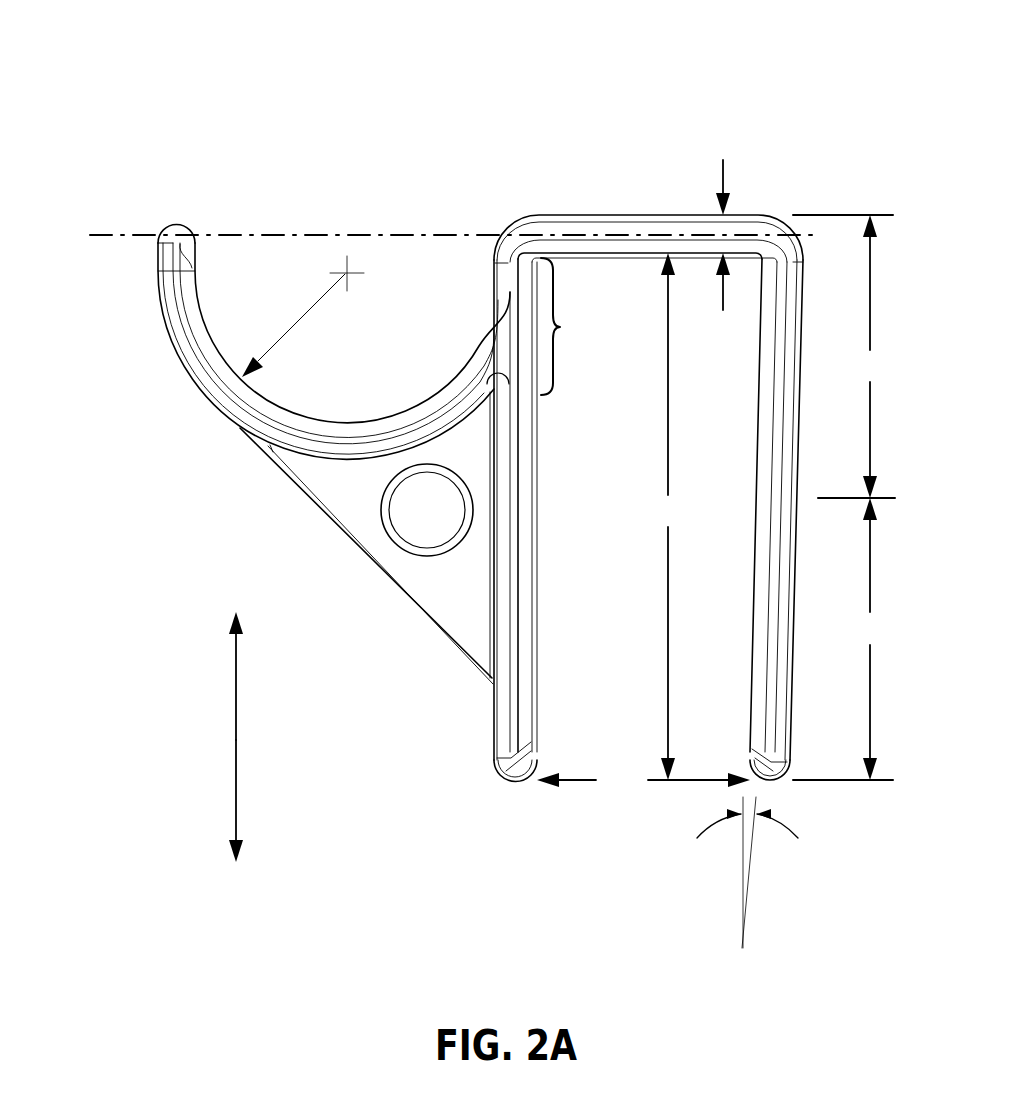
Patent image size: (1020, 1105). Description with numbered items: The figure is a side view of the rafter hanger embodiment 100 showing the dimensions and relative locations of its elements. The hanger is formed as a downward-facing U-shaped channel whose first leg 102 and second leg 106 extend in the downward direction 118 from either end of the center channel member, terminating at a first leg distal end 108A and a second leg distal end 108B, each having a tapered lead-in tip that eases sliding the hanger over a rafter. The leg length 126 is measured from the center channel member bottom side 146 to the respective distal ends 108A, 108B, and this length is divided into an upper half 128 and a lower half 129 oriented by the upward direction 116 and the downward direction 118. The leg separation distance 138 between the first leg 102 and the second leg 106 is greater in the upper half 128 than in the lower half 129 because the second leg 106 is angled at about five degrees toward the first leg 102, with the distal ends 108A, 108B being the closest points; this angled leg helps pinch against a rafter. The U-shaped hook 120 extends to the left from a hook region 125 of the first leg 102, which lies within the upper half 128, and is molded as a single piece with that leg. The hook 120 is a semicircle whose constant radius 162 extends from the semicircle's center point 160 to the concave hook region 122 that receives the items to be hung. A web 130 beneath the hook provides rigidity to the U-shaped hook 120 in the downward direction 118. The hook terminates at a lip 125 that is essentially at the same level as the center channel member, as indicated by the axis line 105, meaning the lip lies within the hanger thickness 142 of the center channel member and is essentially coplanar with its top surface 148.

The rafter hanger embodiment 100 is at (546, 37).
The first leg 102 is at (496, 592).
The axis line 105 is at (331, 233).
The second leg 106 is at (792, 594).
The first leg distal end 108A is at (486, 789).
The second leg distal end 108B is at (799, 789).
The upward direction 116 is at (236, 654).
The downward direction 118 is at (236, 826).
The U-shaped hook 120 is at (374, 299).
The concave hook region 122 is at (306, 418).
The hook region 125 is at (205, 243).
The leg length 126 is at (668, 516).
The upper half 128 is at (844, 356).
The lower half 129 is at (843, 639).
The web 130 is at (428, 622).
The leg separation distance 138 is at (643, 780).
The hanger thickness 142 is at (722, 215).
The center channel member bottom side 146 is at (628, 202).
The top surface 148 is at (576, 214).
The semicircle's center point 160 is at (329, 265).
The semicircle constant radius 162 is at (293, 325).